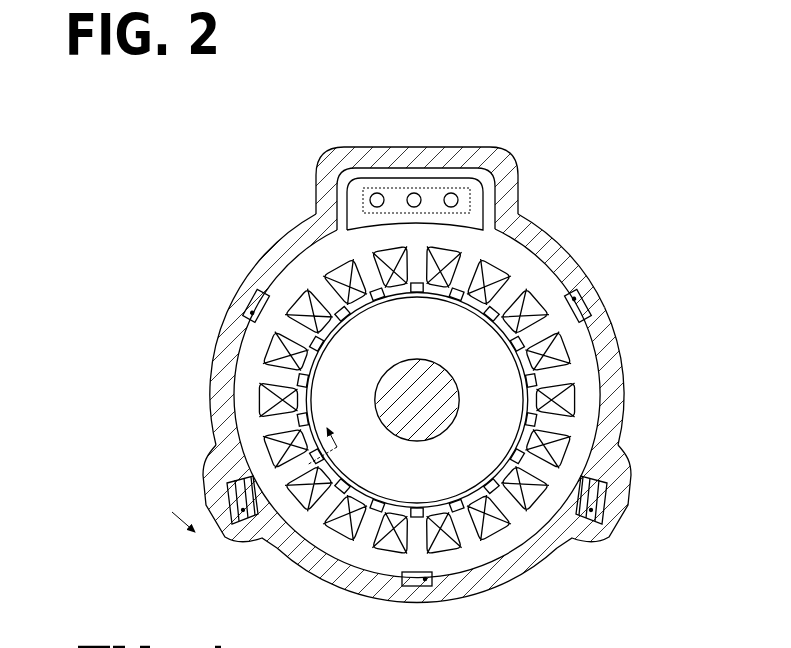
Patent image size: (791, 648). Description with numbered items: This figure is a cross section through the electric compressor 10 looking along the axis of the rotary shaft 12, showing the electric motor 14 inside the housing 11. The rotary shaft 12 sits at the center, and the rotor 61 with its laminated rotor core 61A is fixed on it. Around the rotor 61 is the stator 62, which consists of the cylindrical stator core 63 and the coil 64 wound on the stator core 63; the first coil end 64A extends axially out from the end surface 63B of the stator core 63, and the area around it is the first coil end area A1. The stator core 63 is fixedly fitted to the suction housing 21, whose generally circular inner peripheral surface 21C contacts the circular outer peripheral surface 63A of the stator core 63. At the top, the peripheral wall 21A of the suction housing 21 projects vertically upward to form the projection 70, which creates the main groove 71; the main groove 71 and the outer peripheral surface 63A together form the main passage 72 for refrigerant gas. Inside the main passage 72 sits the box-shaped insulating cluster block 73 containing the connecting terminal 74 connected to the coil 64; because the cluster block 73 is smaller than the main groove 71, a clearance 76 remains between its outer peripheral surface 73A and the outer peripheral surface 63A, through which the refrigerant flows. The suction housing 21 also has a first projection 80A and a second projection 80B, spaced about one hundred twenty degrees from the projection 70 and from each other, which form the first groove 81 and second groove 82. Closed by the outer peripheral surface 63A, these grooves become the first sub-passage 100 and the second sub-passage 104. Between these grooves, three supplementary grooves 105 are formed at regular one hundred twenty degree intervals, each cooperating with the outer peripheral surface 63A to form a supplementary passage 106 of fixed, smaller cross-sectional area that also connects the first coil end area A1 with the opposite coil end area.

The electric compressor 10 is at (552, 141).
The housing 11 is at (395, 390).
The rotary shaft 12 is at (416, 362).
The electric motor 14 is at (549, 271).
The suction housing 21 is at (546, 242).
The peripheral wall 21A is at (570, 283).
The inner peripheral surface 21C is at (606, 348).
The rotor 61 is at (412, 492).
The rotor core 61A is at (417, 512).
The stator 62 is at (657, 358).
The stator core 63 is at (586, 371).
The outer peripheral surface 63A is at (602, 414).
The end surface 63B is at (585, 427).
The coil 64 is at (569, 397).
The first coil end 64A is at (268, 352).
The projection 70 is at (441, 160).
The main groove 71 is at (409, 174).
The main passage 72 is at (463, 170).
The cluster block 73 is at (468, 200).
The outer peripheral surface 73A is at (365, 167).
The connecting terminal 74 is at (362, 199).
The clearance 76 is at (451, 200).
The first projection 80A is at (215, 490).
The second projection 80B is at (609, 512).
The first groove 81 is at (230, 508).
The second groove 82 is at (596, 535).
The first sub-passage 100 is at (243, 530).
The second sub-passage 104 is at (623, 494).
The supplementary groove 105 is at (405, 590).
The supplementary passage 106 is at (432, 589).
The first coil end area A1 is at (246, 411).